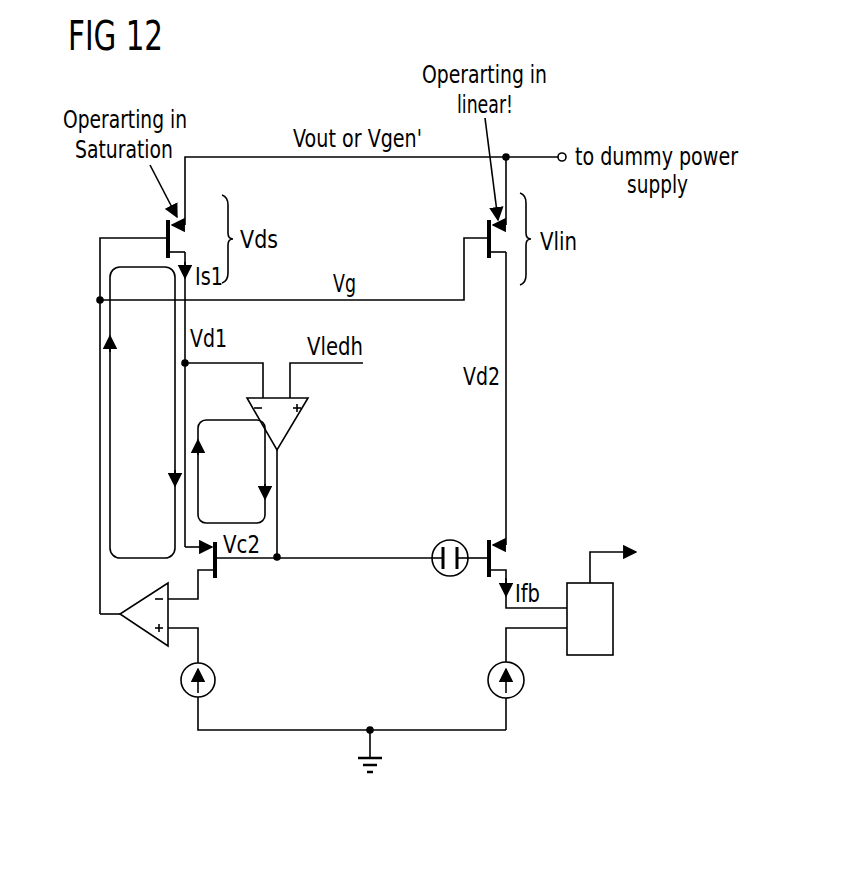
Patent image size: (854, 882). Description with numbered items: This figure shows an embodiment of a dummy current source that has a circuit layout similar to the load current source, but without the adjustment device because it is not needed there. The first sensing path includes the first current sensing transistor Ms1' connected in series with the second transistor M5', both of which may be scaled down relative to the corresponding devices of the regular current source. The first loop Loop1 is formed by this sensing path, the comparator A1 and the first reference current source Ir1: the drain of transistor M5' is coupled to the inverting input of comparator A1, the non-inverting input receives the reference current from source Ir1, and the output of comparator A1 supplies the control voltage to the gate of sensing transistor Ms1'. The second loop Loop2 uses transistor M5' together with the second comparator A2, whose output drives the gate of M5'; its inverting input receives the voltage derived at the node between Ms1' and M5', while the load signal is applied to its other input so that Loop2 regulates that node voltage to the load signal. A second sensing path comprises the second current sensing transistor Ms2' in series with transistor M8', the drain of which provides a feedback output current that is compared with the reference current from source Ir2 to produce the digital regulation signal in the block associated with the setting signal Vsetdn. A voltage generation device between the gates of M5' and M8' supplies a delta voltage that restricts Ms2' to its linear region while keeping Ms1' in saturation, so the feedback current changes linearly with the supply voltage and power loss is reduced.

The first current sensing transistor Ms1' is at (140, 230).
The second current sensing transistor Ms2' is at (460, 230).
The second transistor of the first sensing path M5' is at (226, 571).
The second transistor of the second sensing path M8' is at (495, 581).
The comparator A1 is at (143, 628).
The second comparator A2 is at (290, 427).
The first reference current source Ir1 is at (217, 681).
The reference current source Ir2 is at (488, 680).
The first loop Loop1 is at (142, 412).
The second loop Loop2 is at (231, 471).
The Vsetdn block Vsetdn is at (642, 597).